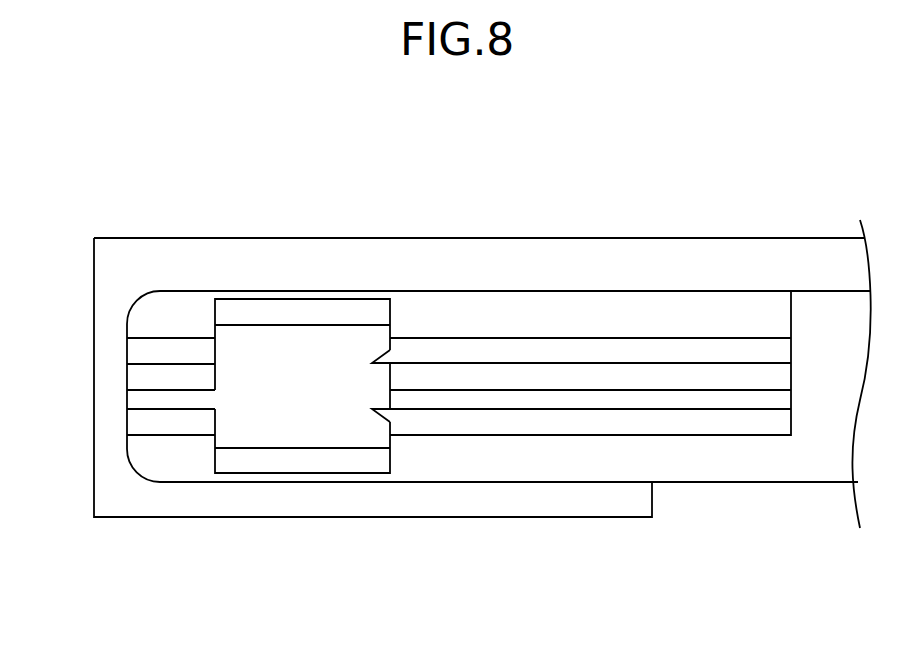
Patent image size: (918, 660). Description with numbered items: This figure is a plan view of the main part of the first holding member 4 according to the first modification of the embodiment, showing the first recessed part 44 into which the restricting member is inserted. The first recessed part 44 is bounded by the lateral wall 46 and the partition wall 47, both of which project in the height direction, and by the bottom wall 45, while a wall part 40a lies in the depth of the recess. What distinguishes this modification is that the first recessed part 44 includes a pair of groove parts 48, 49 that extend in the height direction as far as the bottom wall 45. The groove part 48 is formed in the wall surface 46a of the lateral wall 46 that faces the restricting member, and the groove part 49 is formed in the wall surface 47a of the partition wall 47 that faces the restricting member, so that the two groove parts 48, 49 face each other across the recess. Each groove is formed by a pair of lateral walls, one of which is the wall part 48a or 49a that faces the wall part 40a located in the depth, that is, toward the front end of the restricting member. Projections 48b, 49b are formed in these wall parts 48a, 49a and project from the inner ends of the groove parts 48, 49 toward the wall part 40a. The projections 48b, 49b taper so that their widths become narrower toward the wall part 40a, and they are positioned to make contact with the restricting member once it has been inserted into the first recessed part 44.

The first holding member 4 is at (575, 204).
The wall part located in the depth 40a is at (105, 389).
The first recessed part 44 is at (655, 400).
The bottom wall 45 is at (257, 406).
The lateral wall 46 is at (457, 262).
The wall surface 46a is at (468, 392).
The partition wall 47 is at (500, 503).
The wall surface 47a is at (543, 404).
The groove part 48 is at (261, 333).
The wall part 48a is at (388, 333).
The projection 48b is at (377, 353).
The groove part 49 is at (263, 447).
The wall part 49a is at (389, 440).
The projection 49b is at (377, 411).